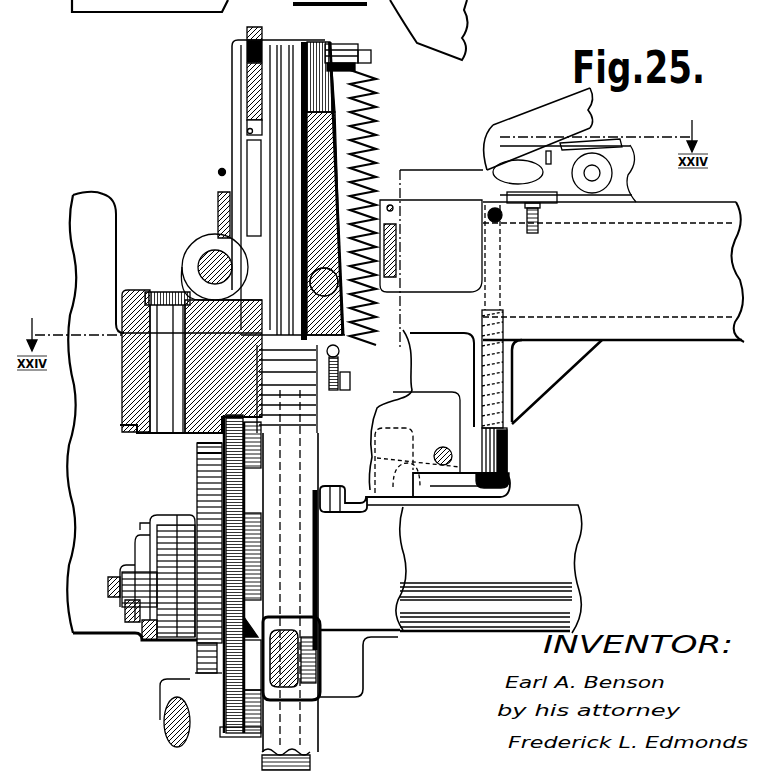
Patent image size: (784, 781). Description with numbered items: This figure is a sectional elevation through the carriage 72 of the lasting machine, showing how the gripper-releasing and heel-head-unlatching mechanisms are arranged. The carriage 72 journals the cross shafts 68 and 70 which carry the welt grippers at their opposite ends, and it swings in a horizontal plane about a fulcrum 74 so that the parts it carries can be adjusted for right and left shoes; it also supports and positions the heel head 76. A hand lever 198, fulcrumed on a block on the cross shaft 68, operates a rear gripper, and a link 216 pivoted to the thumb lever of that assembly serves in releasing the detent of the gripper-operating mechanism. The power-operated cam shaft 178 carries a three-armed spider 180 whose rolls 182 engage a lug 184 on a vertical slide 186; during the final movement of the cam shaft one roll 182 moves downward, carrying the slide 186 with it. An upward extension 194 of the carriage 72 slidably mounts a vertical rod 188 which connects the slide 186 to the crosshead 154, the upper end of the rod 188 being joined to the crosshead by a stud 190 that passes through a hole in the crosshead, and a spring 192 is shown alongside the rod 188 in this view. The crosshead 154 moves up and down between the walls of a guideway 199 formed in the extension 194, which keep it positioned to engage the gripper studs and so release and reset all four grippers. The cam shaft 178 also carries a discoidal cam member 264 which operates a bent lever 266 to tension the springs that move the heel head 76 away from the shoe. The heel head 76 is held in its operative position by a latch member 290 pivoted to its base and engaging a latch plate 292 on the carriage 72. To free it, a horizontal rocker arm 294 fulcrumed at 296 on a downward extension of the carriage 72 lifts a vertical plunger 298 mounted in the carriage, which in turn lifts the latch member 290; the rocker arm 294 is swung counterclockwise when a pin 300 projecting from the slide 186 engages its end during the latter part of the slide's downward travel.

The cross shaft 68 is at (214, 260).
The cross shaft 70 is at (380, 290).
The carriage 72 is at (613, 313).
The fulcrum 74 is at (160, 428).
The heel head 76 is at (632, 185).
The crosshead 154 is at (247, 95).
The cam shaft 178 is at (143, 547).
The three-armed member or spider 180 is at (220, 513).
The rolls 182 is at (258, 432).
The lug 184 is at (260, 592).
The vertical slide 186 is at (318, 534).
The vertical rod 188 is at (300, 133).
The stud 190 is at (247, 52).
The spring 192 is at (377, 112).
The upward extension 194 is at (343, 44).
The hand lever 198 is at (220, 202).
The guideway 199 is at (250, 131).
The link 216 is at (219, 172).
The discoidal cam member 264 is at (197, 659).
The bent lever 266 is at (166, 735).
The latch member 290 is at (560, 202).
The latch plate 292 is at (541, 208).
The horizontal rocker arm 294 is at (457, 490).
The fulcrum 296 is at (412, 490).
The vertical plunger 298 is at (507, 447).
The pin 300 is at (338, 392).